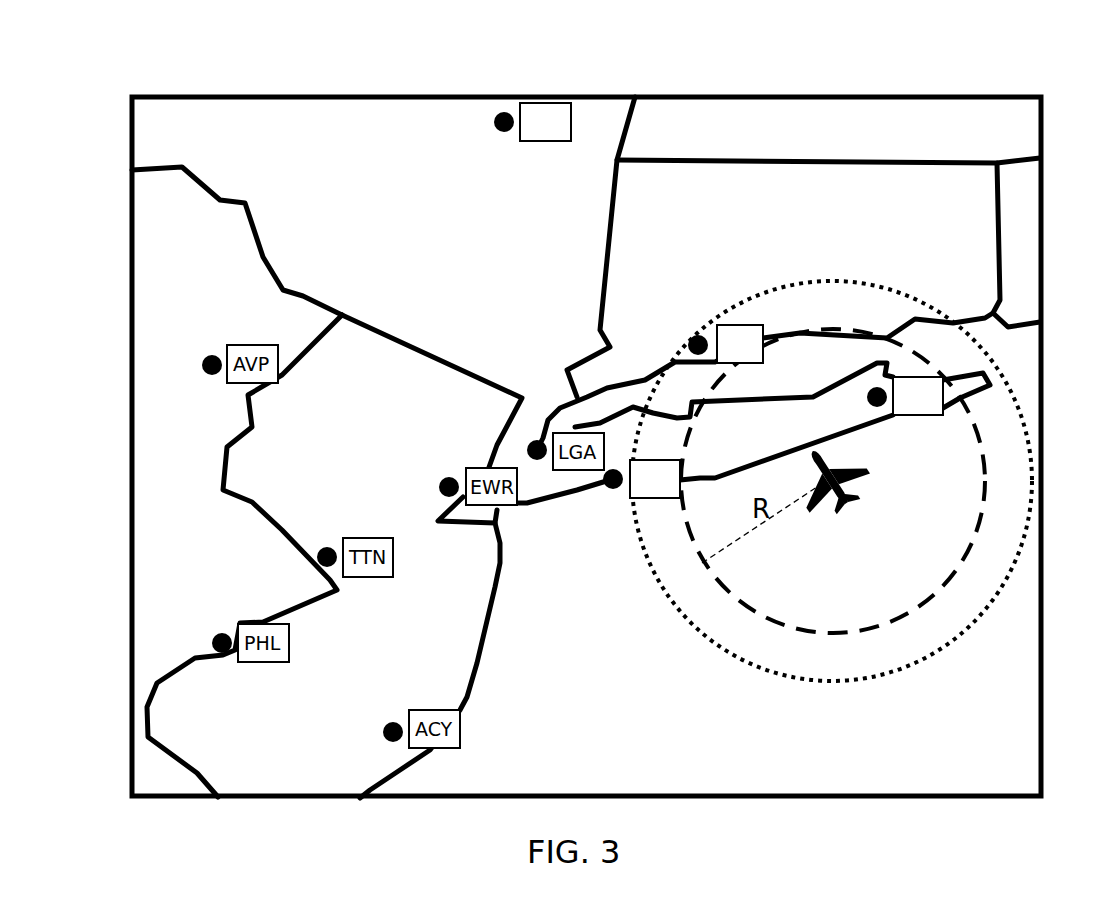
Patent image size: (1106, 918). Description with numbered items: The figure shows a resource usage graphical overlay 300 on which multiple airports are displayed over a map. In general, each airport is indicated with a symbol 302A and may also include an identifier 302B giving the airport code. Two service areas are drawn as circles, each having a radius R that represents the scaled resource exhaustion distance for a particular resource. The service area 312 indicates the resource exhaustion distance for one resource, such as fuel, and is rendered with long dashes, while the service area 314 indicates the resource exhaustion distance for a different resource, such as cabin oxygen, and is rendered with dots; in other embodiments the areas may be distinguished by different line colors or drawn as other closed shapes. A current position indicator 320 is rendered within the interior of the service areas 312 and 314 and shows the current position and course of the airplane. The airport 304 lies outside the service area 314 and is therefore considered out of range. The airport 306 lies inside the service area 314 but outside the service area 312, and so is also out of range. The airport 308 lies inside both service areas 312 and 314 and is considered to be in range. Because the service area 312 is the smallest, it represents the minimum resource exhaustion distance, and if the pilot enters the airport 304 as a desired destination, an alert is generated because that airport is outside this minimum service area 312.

The resource usage graphical overlay 300 is at (88, 88).
The symbol 302A is at (497, 131).
The identifier 302B is at (540, 142).
The airport 304 is at (614, 492).
The airport 306 is at (698, 334).
The airport 308 is at (877, 408).
The service area 312 is at (963, 570).
The service area 314 is at (685, 618).
The current position indicator 320 is at (827, 500).